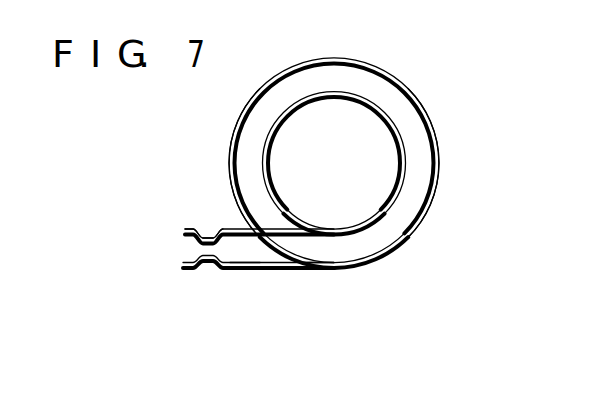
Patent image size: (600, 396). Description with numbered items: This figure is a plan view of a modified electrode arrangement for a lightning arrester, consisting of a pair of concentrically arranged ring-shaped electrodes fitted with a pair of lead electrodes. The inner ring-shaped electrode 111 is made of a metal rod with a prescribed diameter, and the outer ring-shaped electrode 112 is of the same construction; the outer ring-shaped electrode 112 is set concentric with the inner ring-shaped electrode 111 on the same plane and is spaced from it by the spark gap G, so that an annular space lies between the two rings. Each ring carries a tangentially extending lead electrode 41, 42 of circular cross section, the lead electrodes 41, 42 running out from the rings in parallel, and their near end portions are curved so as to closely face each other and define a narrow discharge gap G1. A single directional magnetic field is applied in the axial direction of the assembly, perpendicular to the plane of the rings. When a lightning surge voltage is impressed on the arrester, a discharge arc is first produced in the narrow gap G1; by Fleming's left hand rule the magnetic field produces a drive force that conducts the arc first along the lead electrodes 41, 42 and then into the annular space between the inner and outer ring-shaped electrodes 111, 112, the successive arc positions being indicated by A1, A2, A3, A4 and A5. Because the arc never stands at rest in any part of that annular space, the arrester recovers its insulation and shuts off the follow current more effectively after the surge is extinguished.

The spark gap G is at (303, 76).
The narrow discharge gap G1 is at (202, 251).
The inner ring-shaped electrode 111 is at (349, 99).
The outer ring-shaped electrode 112 is at (417, 101).
The lead electrode 41 is at (237, 229).
The lead electrode 42 is at (272, 268).
The discharge arc position A1 is at (243, 236).
The discharge arc position A2 is at (315, 236).
The discharge arc position A3 is at (385, 208).
The discharge arc position A4 is at (394, 125).
The discharge arc position A5 is at (264, 153).